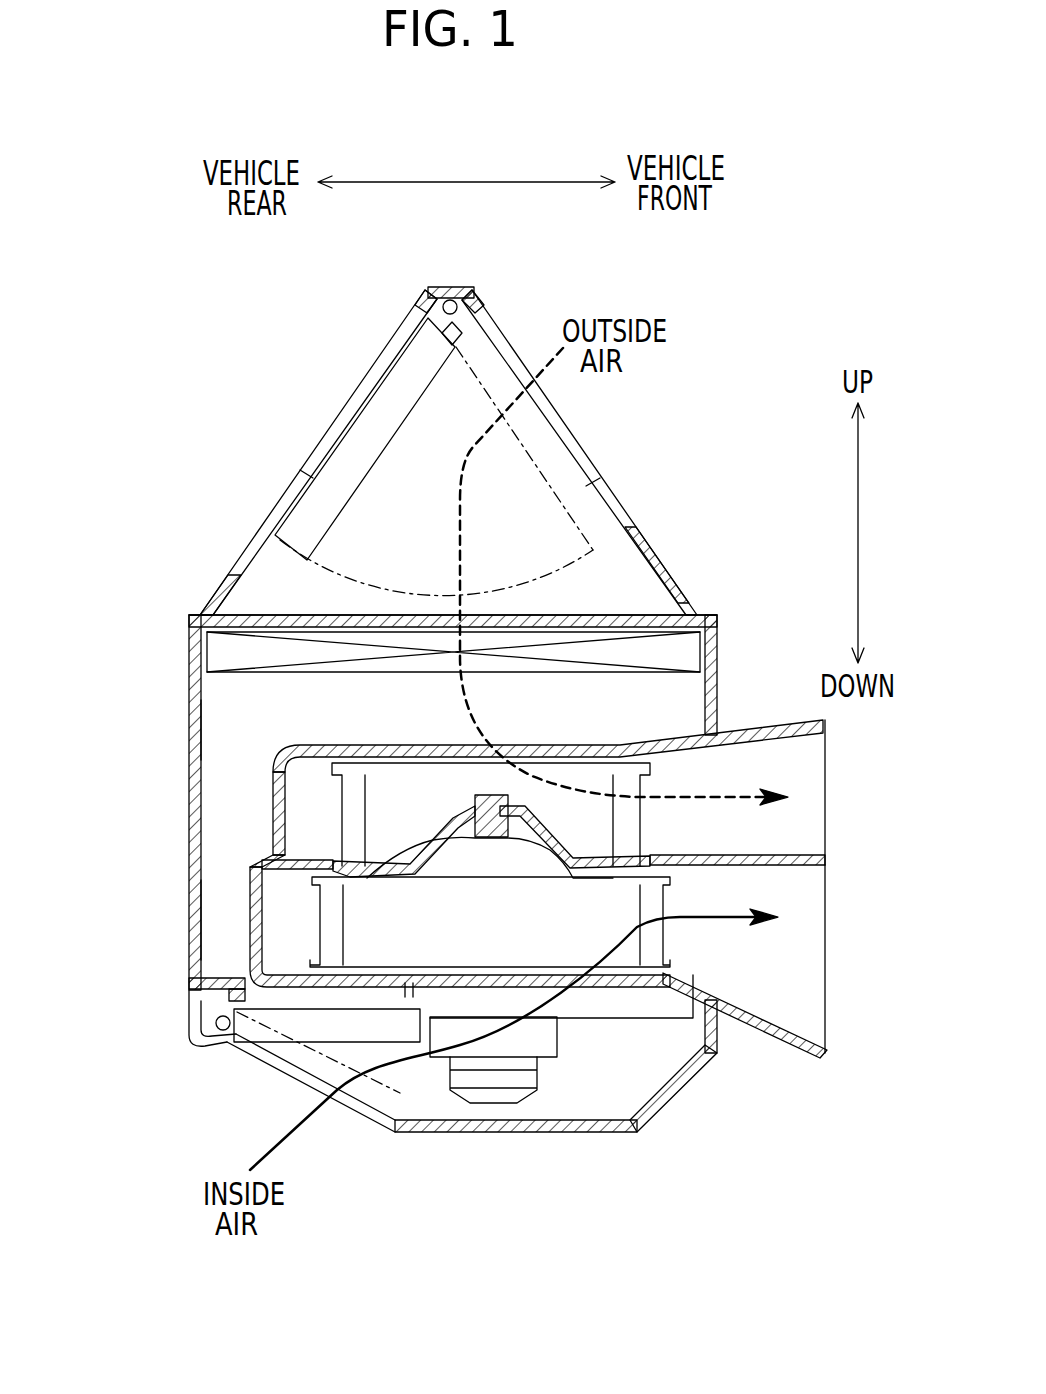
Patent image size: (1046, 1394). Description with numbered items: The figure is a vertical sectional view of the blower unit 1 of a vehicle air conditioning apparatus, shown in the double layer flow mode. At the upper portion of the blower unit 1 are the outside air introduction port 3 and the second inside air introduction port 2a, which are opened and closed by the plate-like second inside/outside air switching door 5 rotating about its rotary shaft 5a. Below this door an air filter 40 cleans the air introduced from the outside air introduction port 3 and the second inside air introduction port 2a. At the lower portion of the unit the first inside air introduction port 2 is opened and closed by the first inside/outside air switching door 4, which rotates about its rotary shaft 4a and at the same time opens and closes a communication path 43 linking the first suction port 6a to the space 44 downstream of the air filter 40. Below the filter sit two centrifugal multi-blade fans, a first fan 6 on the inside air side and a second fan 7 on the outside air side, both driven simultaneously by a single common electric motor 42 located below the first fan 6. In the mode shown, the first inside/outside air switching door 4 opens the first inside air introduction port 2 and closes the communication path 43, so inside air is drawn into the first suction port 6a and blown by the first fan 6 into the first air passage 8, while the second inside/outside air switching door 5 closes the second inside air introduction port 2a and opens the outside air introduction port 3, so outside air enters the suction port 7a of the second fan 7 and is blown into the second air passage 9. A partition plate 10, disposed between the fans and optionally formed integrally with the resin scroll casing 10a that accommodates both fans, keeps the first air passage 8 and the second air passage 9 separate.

The blower unit 1 is at (162, 628).
The first inside air introduction port 2 is at (358, 1118).
The second inside air introduction port 2a is at (308, 470).
The outside air introduction port 3 is at (593, 482).
The first inside/outside air switching door 4 is at (262, 1050).
The rotary shaft 4a is at (212, 1018).
The second inside/outside air switching door 5 is at (382, 403).
The rotary shaft 5a is at (452, 286).
The first fan 6 is at (330, 908).
The first suction port 6a is at (623, 978).
The second fan 7 is at (352, 815).
The suction port 7a is at (407, 747).
The first air passage 8 is at (803, 985).
The second air passage 9 is at (797, 780).
The partition plate 10 is at (773, 853).
The scroll casing 10a is at (247, 920).
The air filter 40 is at (673, 650).
The electric motor 42 is at (543, 1035).
The communication path 43 is at (283, 972).
The space 44 is at (238, 725).